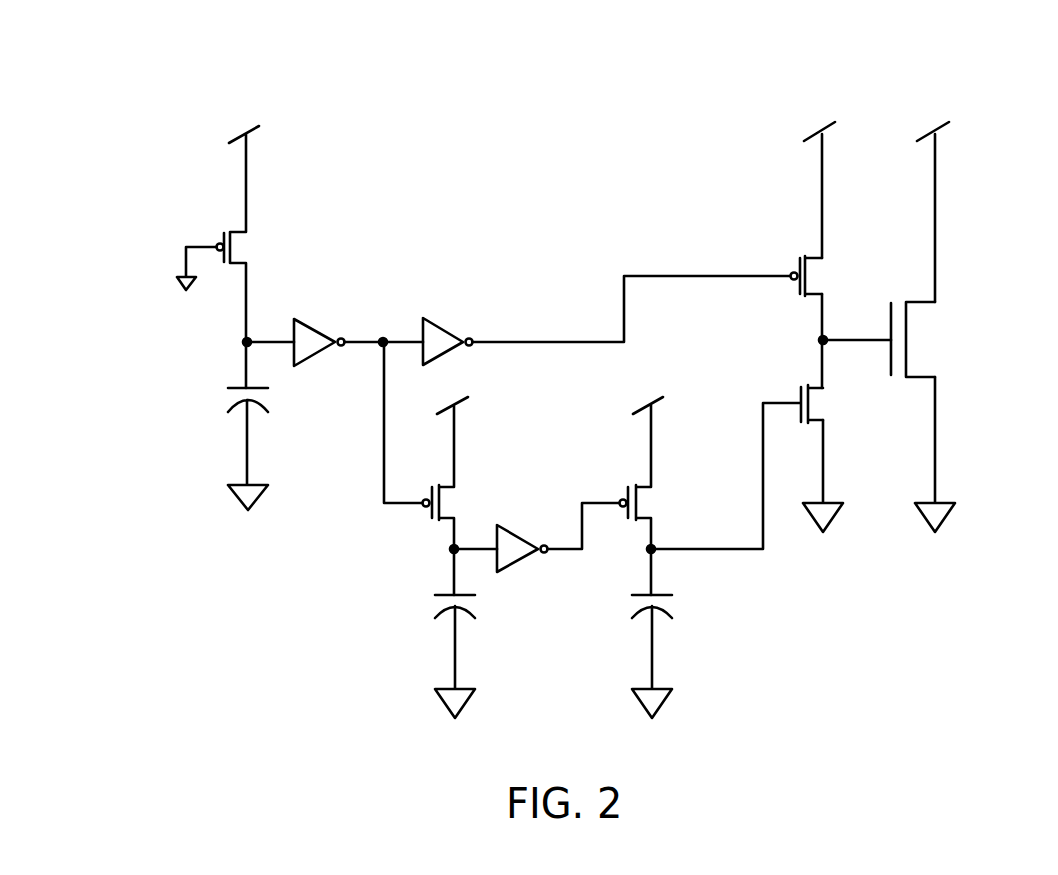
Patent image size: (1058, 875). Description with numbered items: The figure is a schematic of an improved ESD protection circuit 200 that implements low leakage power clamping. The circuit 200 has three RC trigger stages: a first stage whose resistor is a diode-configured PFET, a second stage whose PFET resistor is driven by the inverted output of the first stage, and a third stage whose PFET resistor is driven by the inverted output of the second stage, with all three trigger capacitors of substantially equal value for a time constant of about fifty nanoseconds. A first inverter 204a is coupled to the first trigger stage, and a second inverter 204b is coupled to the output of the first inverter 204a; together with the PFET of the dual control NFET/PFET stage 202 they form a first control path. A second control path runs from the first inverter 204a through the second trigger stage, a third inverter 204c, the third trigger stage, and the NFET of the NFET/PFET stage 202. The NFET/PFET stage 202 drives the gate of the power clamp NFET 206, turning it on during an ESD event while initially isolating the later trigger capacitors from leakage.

The ESD protection circuit 200 is at (124, 88).
The dual control NFET/PFET stage 202 is at (750, 243).
The first inverter 204a is at (350, 306).
The second inverter 204b is at (483, 306).
The third inverter 204c is at (552, 510).
The power clamp NFET 206 is at (913, 378).